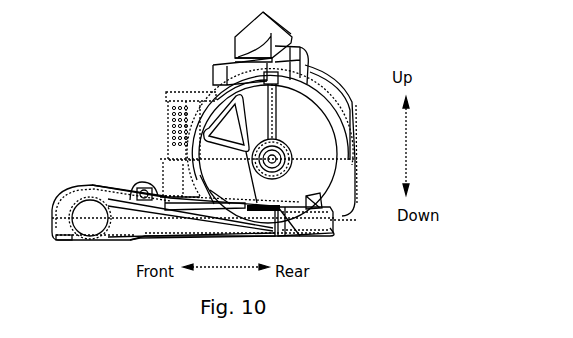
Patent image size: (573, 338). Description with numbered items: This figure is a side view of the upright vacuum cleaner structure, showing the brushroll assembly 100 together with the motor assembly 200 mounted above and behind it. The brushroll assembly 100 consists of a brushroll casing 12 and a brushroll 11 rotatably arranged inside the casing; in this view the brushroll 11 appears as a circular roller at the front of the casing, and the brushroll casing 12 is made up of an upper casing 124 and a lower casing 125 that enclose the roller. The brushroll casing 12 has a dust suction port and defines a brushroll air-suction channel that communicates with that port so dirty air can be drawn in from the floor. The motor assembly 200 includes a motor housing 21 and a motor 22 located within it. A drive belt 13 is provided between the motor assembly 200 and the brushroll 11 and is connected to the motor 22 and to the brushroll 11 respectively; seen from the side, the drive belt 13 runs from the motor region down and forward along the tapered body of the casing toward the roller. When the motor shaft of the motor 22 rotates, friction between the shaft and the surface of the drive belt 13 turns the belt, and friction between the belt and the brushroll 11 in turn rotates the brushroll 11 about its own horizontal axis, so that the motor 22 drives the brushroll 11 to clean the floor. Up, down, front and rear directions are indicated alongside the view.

The brushroll assembly 100 is at (76, 167).
The brushroll 11 is at (92, 208).
The brushroll casing 12 is at (52, 212).
The drive belt 13 is at (130, 197).
The upper casing 124 is at (148, 186).
The lower casing 125 is at (142, 242).
The motor assembly 200 is at (386, 208).
The motor housing 21 is at (356, 182).
The motor 22 is at (298, 236).